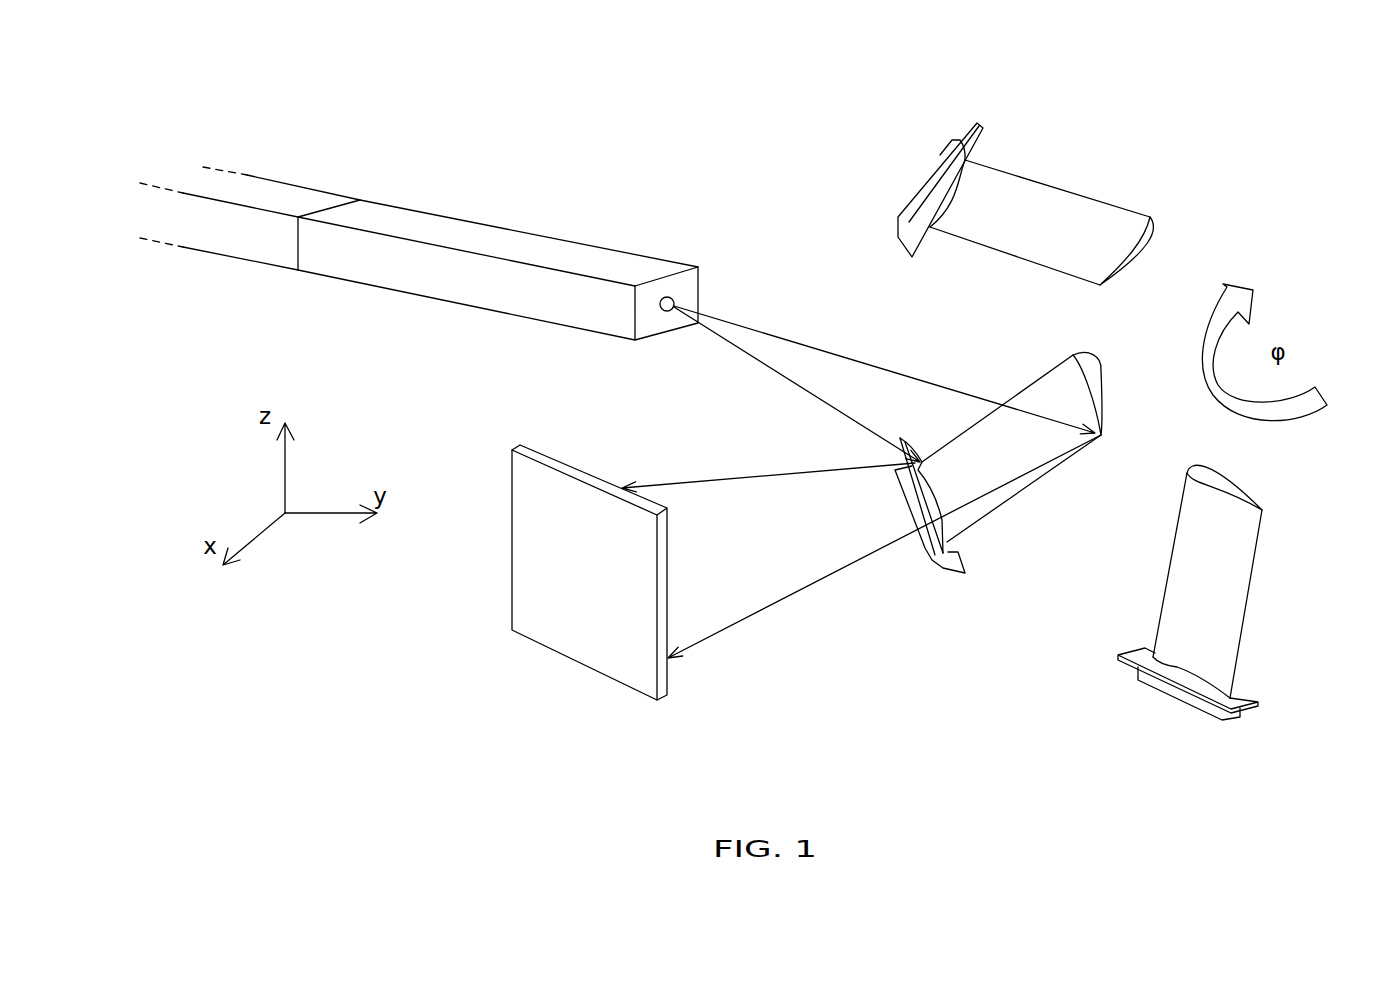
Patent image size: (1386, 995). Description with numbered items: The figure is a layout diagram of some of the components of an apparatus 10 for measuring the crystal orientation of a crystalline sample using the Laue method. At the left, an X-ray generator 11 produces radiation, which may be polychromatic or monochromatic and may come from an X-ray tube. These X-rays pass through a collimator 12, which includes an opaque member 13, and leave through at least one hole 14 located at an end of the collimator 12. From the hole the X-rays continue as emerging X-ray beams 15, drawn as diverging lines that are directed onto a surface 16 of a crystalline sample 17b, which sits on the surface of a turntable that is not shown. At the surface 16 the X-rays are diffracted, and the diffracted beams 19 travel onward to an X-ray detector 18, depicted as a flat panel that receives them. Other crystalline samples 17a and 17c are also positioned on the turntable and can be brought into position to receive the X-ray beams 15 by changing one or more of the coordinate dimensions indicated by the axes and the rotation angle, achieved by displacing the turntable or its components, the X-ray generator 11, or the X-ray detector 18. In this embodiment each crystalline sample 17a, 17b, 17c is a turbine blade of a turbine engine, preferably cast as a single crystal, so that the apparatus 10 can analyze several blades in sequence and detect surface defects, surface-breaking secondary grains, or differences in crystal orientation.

The apparatus 10 is at (732, 118).
The X-ray generator 11 is at (283, 202).
The collimator 12 is at (525, 245).
The opaque member 13 is at (475, 283).
The hole 14 is at (670, 297).
The emerging X-ray beams 15 is at (808, 347).
The surface 16 is at (1047, 388).
The crystalline sample 17a is at (1132, 178).
The crystalline sample 17b is at (1040, 505).
The crystalline sample 17c is at (1263, 587).
The X-ray detector 18 is at (492, 598).
The diffracted beams 19 is at (727, 478).